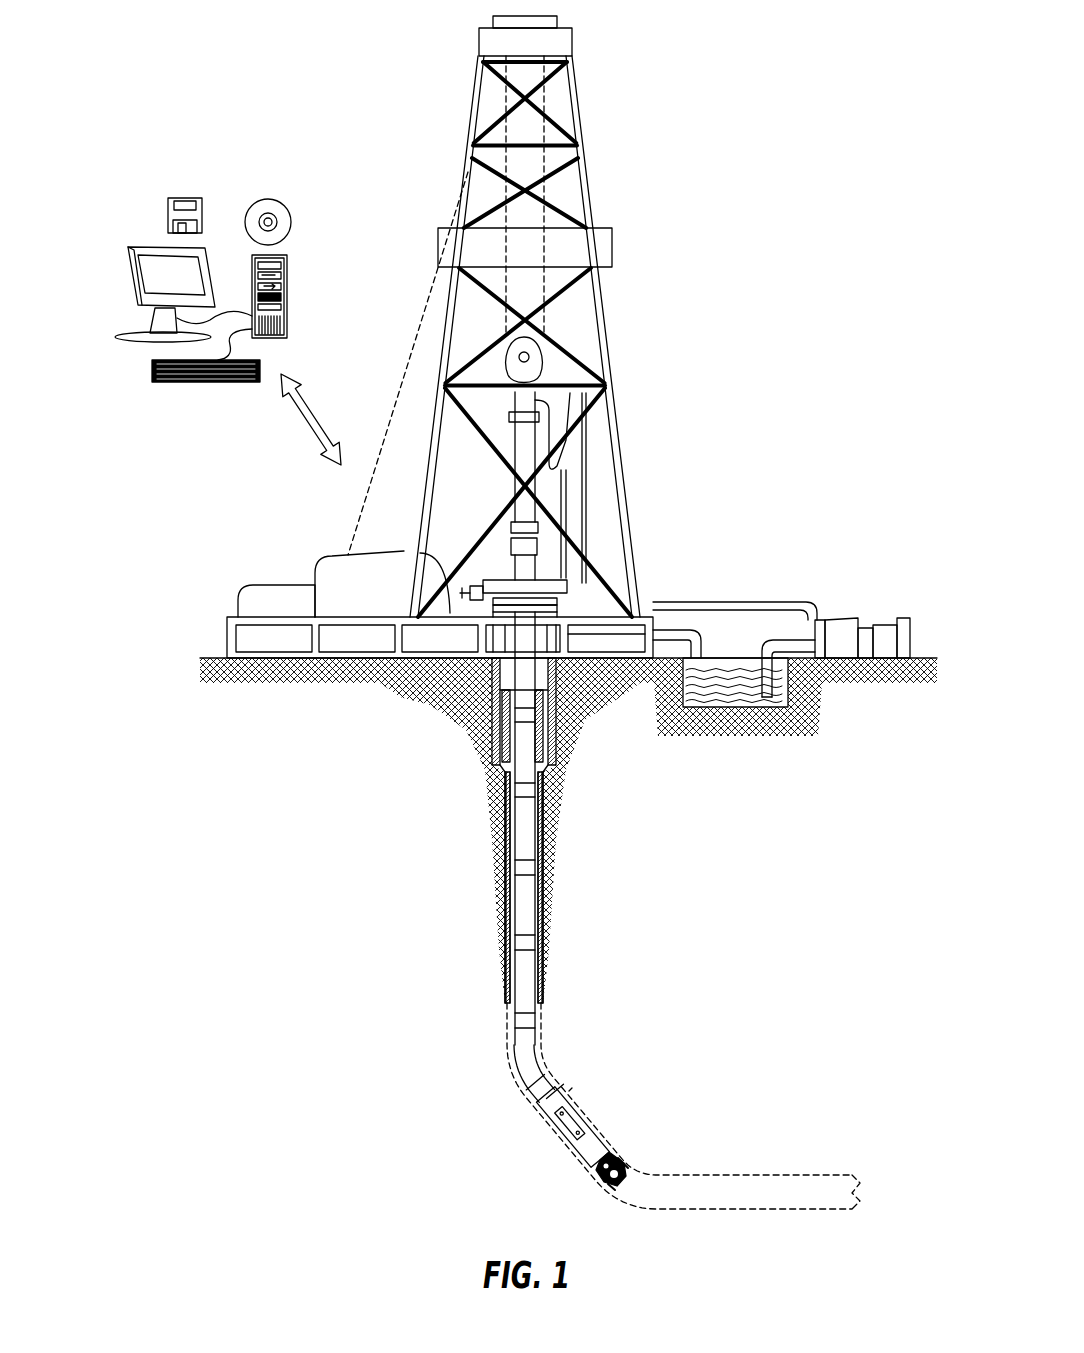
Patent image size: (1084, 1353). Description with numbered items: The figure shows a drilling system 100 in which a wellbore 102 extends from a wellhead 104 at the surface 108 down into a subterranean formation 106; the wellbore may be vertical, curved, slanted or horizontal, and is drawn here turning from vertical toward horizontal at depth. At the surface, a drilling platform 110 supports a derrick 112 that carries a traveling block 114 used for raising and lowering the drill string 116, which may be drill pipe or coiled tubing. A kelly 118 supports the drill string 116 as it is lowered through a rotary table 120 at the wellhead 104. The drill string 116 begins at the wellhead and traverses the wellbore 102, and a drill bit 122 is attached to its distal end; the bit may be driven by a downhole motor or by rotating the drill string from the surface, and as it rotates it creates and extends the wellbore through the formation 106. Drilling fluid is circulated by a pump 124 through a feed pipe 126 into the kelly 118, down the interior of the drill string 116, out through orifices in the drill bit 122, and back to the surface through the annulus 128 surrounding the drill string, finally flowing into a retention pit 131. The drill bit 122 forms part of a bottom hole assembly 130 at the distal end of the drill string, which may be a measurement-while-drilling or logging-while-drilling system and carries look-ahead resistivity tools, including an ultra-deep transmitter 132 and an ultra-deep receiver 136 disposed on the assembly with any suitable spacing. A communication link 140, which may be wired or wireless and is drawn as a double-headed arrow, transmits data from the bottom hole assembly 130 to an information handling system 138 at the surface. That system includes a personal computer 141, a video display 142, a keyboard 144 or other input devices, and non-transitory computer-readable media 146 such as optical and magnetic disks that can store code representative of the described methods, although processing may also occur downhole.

The drilling system 100 is at (842, 120).
The wellbore 102 is at (546, 860).
The wellhead 104 is at (568, 605).
The subterranean formation 106 is at (775, 954).
The surface 108 is at (920, 658).
The drilling platform 110 is at (227, 641).
The derrick 112 is at (586, 169).
The traveling block 114 is at (547, 357).
The drill string 116 is at (540, 846).
The kelly 118 is at (526, 442).
The rotary table 120 is at (560, 578).
The drill bit 122 is at (623, 1156).
The pump 124 is at (845, 620).
The feed pipe 126 is at (763, 600).
The annulus 128 is at (503, 860).
The bottom hole assembly 130 is at (581, 1114).
The retention pit 131 is at (730, 692).
The ultra-deep transmitter 132 is at (579, 1147).
The ultra-deep receiver 136 is at (561, 1103).
The information handling system 138 is at (203, 295).
The communication link 140 is at (298, 423).
The personal computer 141 is at (288, 265).
The video display 142 is at (130, 284).
The keyboard 144 is at (162, 384).
The non-transitory computer-readable media 146 is at (266, 198).